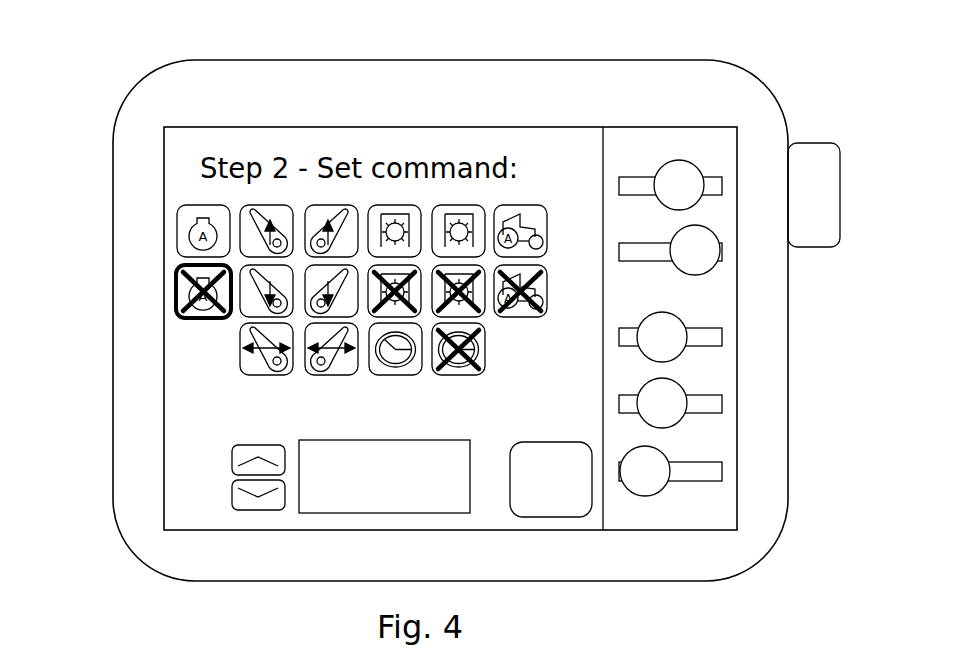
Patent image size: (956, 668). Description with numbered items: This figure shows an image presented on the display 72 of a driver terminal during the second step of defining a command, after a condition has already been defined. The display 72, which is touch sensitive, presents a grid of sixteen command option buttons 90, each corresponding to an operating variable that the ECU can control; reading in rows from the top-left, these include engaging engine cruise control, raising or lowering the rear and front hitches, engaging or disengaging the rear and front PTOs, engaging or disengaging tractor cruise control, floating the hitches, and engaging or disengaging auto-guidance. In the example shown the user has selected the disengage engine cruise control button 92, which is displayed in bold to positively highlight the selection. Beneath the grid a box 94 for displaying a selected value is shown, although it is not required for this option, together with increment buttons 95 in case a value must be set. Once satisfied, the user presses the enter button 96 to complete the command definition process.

The display 72 is at (164, 474).
The command option buttons 90 is at (298, 281).
The disengage engine cruise control button 92 is at (177, 308).
The box 94 is at (330, 512).
The increment buttons 95 is at (230, 463).
The enter button 96 is at (572, 514).